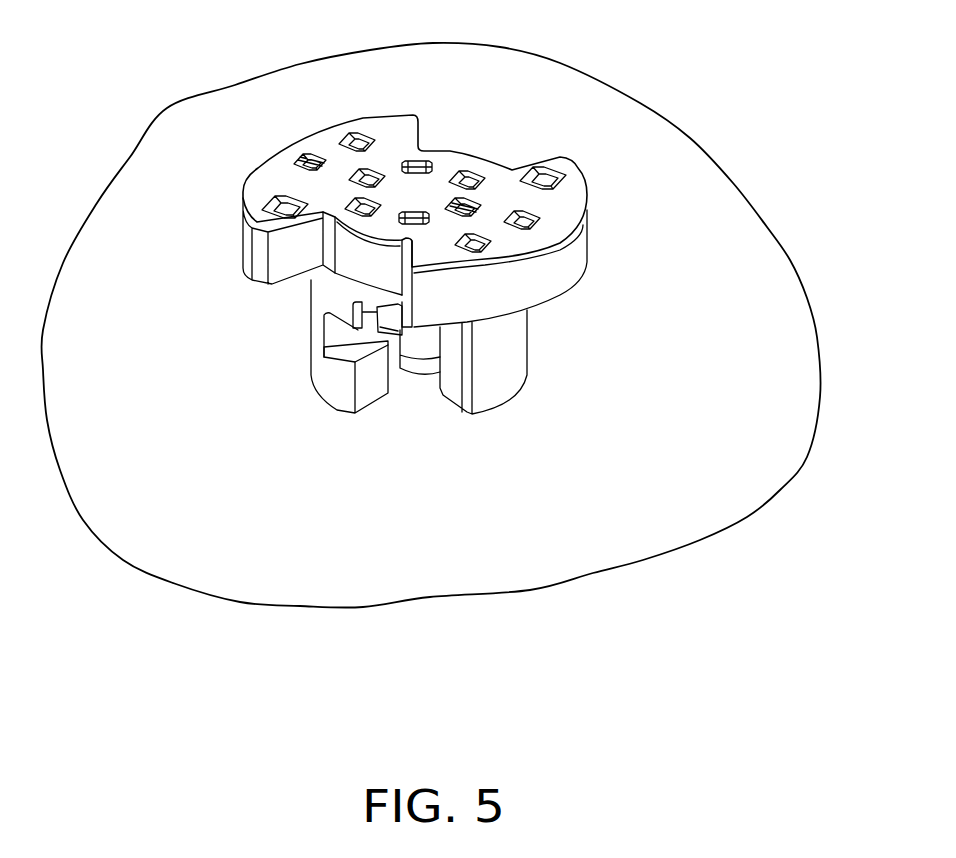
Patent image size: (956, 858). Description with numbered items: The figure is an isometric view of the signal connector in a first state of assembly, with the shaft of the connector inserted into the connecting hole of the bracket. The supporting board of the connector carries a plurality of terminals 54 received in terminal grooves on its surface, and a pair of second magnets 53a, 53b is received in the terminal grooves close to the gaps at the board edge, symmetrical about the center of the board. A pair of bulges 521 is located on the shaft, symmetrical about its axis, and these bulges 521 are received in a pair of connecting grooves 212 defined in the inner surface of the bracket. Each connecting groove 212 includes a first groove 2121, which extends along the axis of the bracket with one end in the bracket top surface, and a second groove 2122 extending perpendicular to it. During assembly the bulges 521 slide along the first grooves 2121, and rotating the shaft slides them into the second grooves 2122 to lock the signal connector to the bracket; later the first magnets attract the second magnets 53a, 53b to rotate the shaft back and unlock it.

The terminal 54 is at (307, 160).
The second magnet 53a is at (283, 210).
The second magnet 53b is at (543, 180).
The bulge 521 is at (390, 318).
The connecting groove 212 is at (338, 517).
The second groove 2122 is at (357, 348).
The first groove 2121 is at (417, 402).